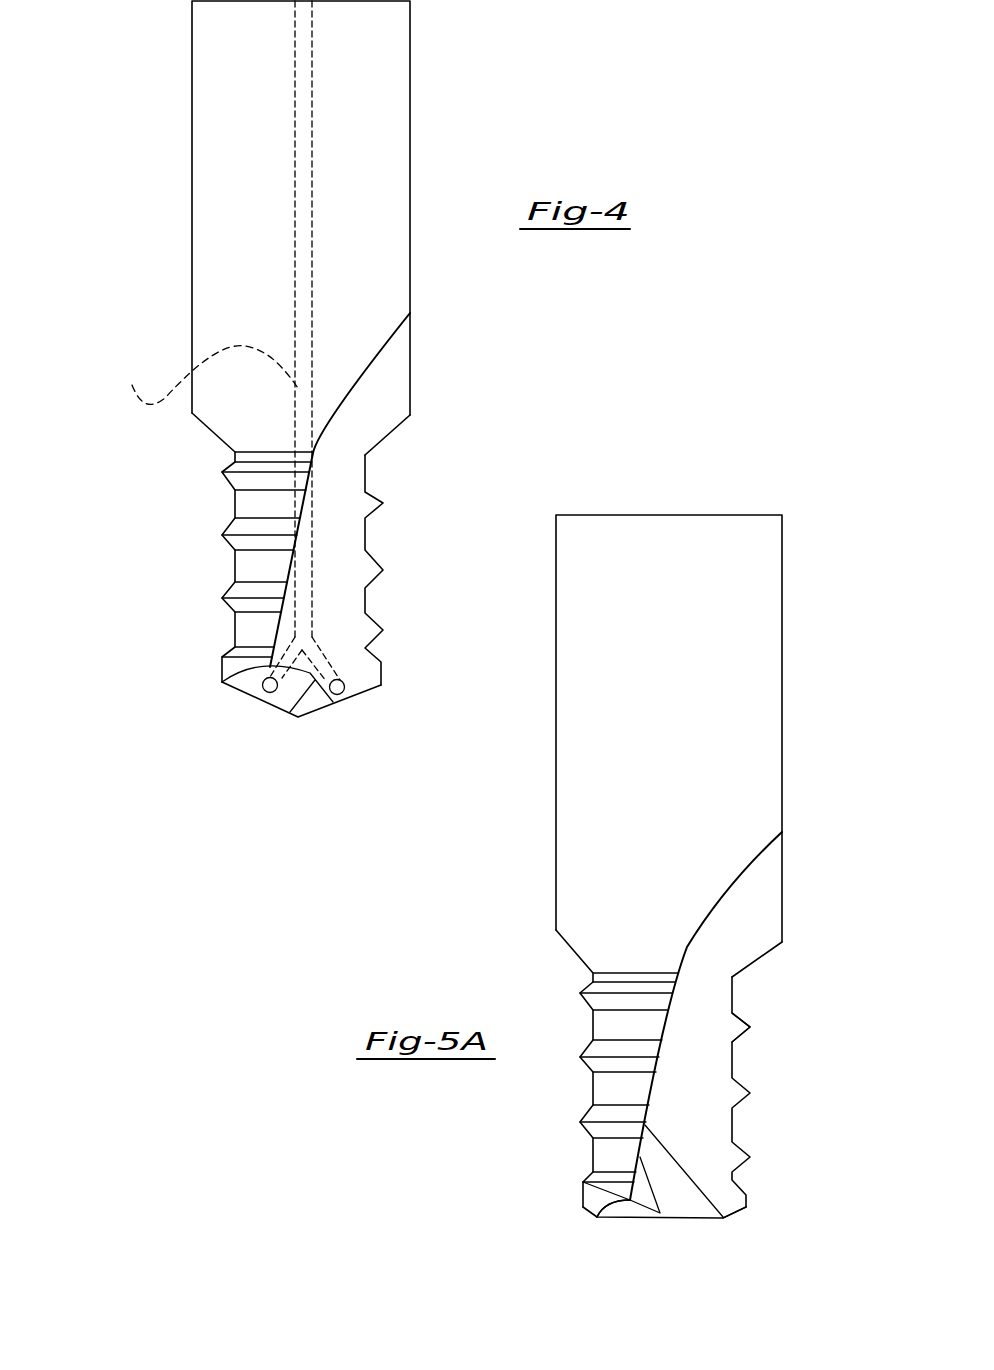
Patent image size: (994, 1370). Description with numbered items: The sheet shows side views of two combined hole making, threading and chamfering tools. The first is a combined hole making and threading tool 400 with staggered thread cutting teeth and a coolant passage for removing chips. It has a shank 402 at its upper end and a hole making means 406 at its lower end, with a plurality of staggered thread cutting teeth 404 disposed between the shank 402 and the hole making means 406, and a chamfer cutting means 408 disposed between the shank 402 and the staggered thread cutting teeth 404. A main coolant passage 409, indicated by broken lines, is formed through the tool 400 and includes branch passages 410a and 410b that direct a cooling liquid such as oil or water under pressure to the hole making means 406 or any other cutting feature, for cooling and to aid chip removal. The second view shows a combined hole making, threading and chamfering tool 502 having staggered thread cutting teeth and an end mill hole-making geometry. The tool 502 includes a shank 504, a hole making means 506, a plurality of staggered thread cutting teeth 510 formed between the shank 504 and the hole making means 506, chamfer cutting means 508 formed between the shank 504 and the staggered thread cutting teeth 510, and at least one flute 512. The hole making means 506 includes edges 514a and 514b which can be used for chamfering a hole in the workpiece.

In FIG. 4, the combined hole making and threading tool 400 is at (266, 373).
In FIG. 4, the shank 402 is at (411, 212).
In FIG. 4, the staggered thread cutting teeth 404 is at (365, 517).
In FIG. 4, the hole making means 406 is at (327, 700).
In FIG. 4, the chamfer cutting means 408 is at (398, 425).
In FIG. 4, the main coolant passage 409 is at (191, 375).
In FIG. 4, the branch passage 410a is at (262, 690).
In FIG. 4, the branch passage 410b is at (345, 685).
In FIG. 5A, the combined hole making, threading and chamfering tool 502 is at (677, 905).
In FIG. 5A, the shank 504 is at (697, 758).
In FIG. 5A, the hole making means 506 is at (710, 1220).
In FIG. 5A, the chamfer cutting means 508 is at (760, 960).
In FIG. 5A, the staggered thread cutting teeth 510 is at (748, 1033).
In FIG. 5A, the flute 512 is at (713, 1068).
In FIG. 5A, the edge 514a is at (587, 1217).
In FIG. 5A, the edge 514b is at (742, 1208).